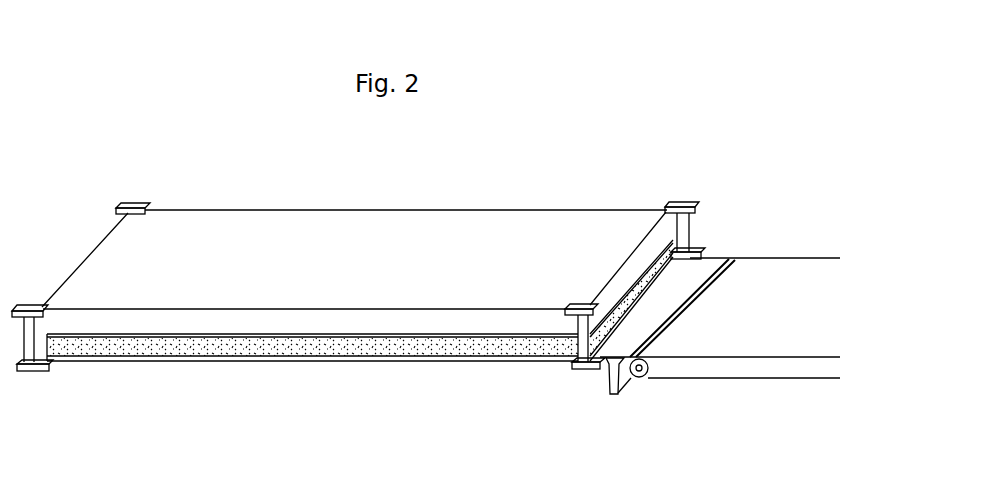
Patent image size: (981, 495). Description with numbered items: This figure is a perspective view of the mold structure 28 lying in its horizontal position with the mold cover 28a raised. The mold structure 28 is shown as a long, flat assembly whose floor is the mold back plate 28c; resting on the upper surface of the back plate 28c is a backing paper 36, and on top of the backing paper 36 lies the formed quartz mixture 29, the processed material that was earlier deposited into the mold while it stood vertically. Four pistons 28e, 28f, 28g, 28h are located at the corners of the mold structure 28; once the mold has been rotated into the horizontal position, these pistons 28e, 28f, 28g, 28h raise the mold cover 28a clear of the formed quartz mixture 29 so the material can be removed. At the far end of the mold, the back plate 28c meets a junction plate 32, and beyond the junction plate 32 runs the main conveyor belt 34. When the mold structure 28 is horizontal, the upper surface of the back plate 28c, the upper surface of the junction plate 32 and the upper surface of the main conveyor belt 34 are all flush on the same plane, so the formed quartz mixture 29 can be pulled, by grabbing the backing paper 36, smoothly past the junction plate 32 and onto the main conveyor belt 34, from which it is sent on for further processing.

The mold structure 28 is at (416, 193).
The mold cover 28a is at (243, 230).
The mold back plate 28c is at (100, 358).
The piston 28e is at (25, 371).
The piston 28f is at (578, 362).
The piston 28g is at (122, 205).
The piston 28h is at (692, 248).
The formed quartz mixture 29 is at (373, 345).
The junction plate 32 is at (613, 394).
The main conveyor belt 34 is at (750, 277).
The backing paper 36 is at (670, 278).